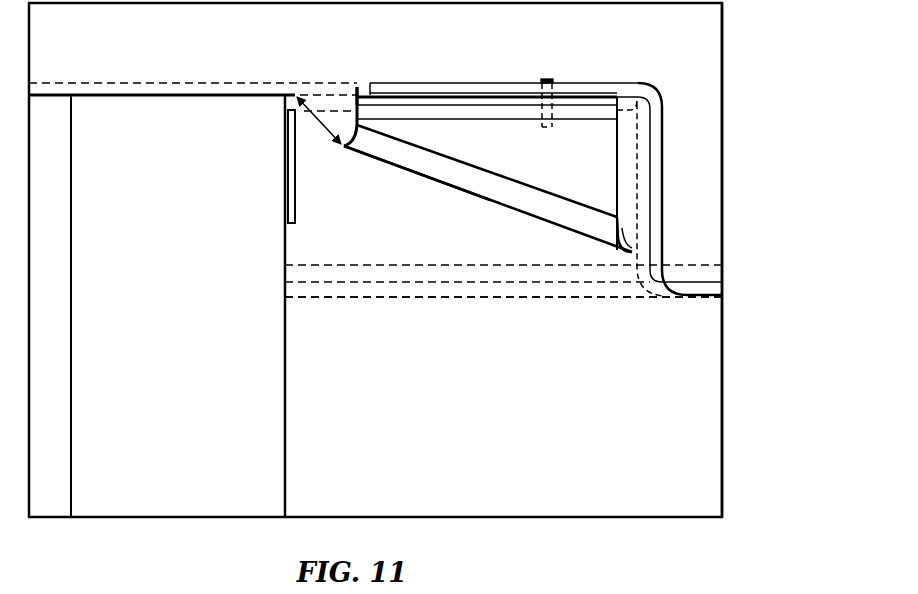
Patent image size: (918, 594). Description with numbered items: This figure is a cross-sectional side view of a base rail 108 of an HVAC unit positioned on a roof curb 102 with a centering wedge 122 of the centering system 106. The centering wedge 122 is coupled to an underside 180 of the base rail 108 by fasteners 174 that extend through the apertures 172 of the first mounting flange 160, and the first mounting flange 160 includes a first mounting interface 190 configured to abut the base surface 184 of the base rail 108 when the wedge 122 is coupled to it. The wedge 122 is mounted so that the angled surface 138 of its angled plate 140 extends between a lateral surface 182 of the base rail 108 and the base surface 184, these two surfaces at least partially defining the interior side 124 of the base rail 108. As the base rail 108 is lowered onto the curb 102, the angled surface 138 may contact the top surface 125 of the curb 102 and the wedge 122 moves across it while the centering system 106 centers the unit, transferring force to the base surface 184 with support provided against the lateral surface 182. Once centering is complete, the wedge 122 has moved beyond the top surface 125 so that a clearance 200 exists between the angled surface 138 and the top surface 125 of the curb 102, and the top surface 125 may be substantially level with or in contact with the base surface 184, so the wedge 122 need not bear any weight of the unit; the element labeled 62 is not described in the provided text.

The channel rail 62 is at (608, 95).
The curb 102 is at (285, 428).
The centering system 106 is at (408, 312).
The base rail 108 is at (722, 203).
The centering wedge 122 is at (617, 132).
The interior side 124 is at (545, 315).
The top surface 125 is at (177, 94).
The angled surface 138 is at (428, 178).
The angled plate 140 is at (517, 211).
The first mounting flange 160 is at (362, 88).
The apertures 172 is at (545, 108).
The fasteners 174 is at (551, 82).
The underside 180 is at (467, 325).
The lateral surface 182 is at (647, 258).
The base surface 184 is at (388, 98).
The first mounting interface 190 is at (440, 93).
The clearance 200 is at (330, 103).